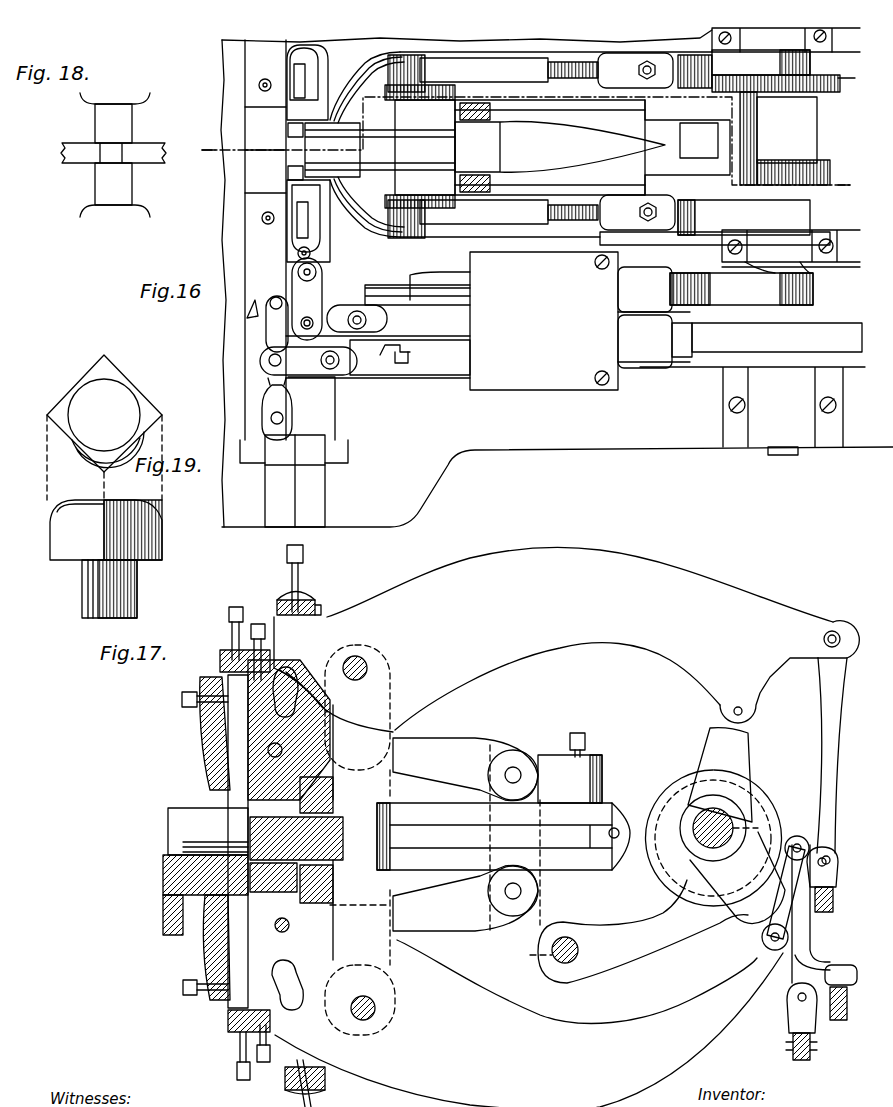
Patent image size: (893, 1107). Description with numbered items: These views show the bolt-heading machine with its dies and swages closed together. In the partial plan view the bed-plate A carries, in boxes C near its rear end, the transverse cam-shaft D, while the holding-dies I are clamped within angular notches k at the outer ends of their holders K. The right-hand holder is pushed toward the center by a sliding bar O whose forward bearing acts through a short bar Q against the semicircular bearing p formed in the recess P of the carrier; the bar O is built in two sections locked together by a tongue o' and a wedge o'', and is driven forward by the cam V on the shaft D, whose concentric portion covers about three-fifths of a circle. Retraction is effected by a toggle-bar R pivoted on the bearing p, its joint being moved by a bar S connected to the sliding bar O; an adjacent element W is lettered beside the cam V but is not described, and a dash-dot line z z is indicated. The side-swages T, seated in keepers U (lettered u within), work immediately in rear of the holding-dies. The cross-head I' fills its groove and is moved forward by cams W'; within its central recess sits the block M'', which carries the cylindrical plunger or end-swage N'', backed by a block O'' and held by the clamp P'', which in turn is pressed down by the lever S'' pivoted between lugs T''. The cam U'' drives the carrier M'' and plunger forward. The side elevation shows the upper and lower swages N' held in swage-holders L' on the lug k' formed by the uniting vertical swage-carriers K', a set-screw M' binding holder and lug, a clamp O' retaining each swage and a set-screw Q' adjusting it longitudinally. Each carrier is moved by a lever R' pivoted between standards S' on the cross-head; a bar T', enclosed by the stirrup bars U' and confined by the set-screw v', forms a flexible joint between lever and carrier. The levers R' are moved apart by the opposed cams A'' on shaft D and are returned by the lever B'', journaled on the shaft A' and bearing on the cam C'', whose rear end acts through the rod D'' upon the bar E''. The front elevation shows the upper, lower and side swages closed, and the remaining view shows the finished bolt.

In FIG. 16, the bed-plate A is at (553, 278).
In FIG. 17, the bed-plate A is at (198, 895).
In FIG. 16, the holding-dies I is at (376, 150).
In FIG. 17, the holding-dies I is at (208, 841).
In FIG. 16, the cross-head I' is at (547, 141).
In FIG. 16, the holder K is at (294, 369).
In FIG. 16, the keeper U is at (308, 153).
In FIG. 16, the slot u is at (301, 151).
In FIG. 16, the bar T' is at (295, 151).
In FIG. 17, the bar T' is at (285, 692).
In FIG. 16, the lugs T'' is at (475, 147).
In FIG. 16, the plunger or end-swage N'' is at (420, 146).
In FIG. 16, the clamp P'' is at (592, 147).
In FIG. 16, the lever S'' is at (586, 146).
In FIG. 16, the block M'' is at (550, 103).
In FIG. 17, the block M'' is at (503, 836).
In FIG. 16, the set-screw M' is at (550, 178).
In FIG. 17, the set-screw M' is at (267, 842).
In FIG. 16, the cams W' is at (720, 147).
In FIG. 16, the cam C'' is at (848, 83).
In FIG. 17, the cam C'' is at (715, 838).
In FIG. 16, the cam U'' is at (785, 138).
In FIG. 16, the boxes C is at (752, 237).
In FIG. 16, the shaft D is at (783, 460).
In FIG. 17, the shaft D is at (732, 828).
In FIG. 16, the gear W is at (741, 283).
In FIG. 16, the cam V is at (767, 340).
In FIG. 16, the sliding bar O is at (378, 325).
In FIG. 16, the tongue o' is at (391, 345).
In FIG. 17, the tongue o' is at (196, 696).
In FIG. 16, the wedge o'' is at (404, 364).
In FIG. 17, the wedge o'' is at (197, 985).
In FIG. 16, the bar S is at (323, 340).
In FIG. 16, the bar Q is at (294, 305).
In FIG. 17, the bar Q is at (243, 1065).
In FIG. 16, the semicircular bearing p is at (246, 312).
In FIG. 16, the angular notch k is at (301, 248).
In FIG. 16, the toggle-bar R is at (277, 409).
In FIG. 16, the section line z is at (524, 130).
In FIG. 18, the swage N' is at (113, 154).
In FIG. 18, the side-swages T is at (113, 153).
In FIG. 17, the lever R' is at (566, 827).
In FIG. 17, the set-screw v' is at (304, 826).
In FIG. 17, the bars U' is at (311, 838).
In FIG. 17, the set-screw Q' is at (232, 625).
In FIG. 17, the swage-holder L' is at (237, 841).
In FIG. 17, the recess P is at (278, 837).
In FIG. 17, the lug k' is at (286, 828).
In FIG. 17, the clamp O' is at (207, 733).
In FIG. 17, the block O'' is at (209, 947).
In FIG. 17, the standards S' is at (360, 840).
In FIG. 17, the vertical swage-carriers K' is at (466, 833).
In FIG. 17, the shaft A' is at (541, 950).
In FIG. 17, the cams A'' is at (736, 815).
In FIG. 17, the lever B'' is at (643, 931).
In FIG. 17, the rod D'' is at (795, 893).
In FIG. 17, the bar E'' is at (821, 962).